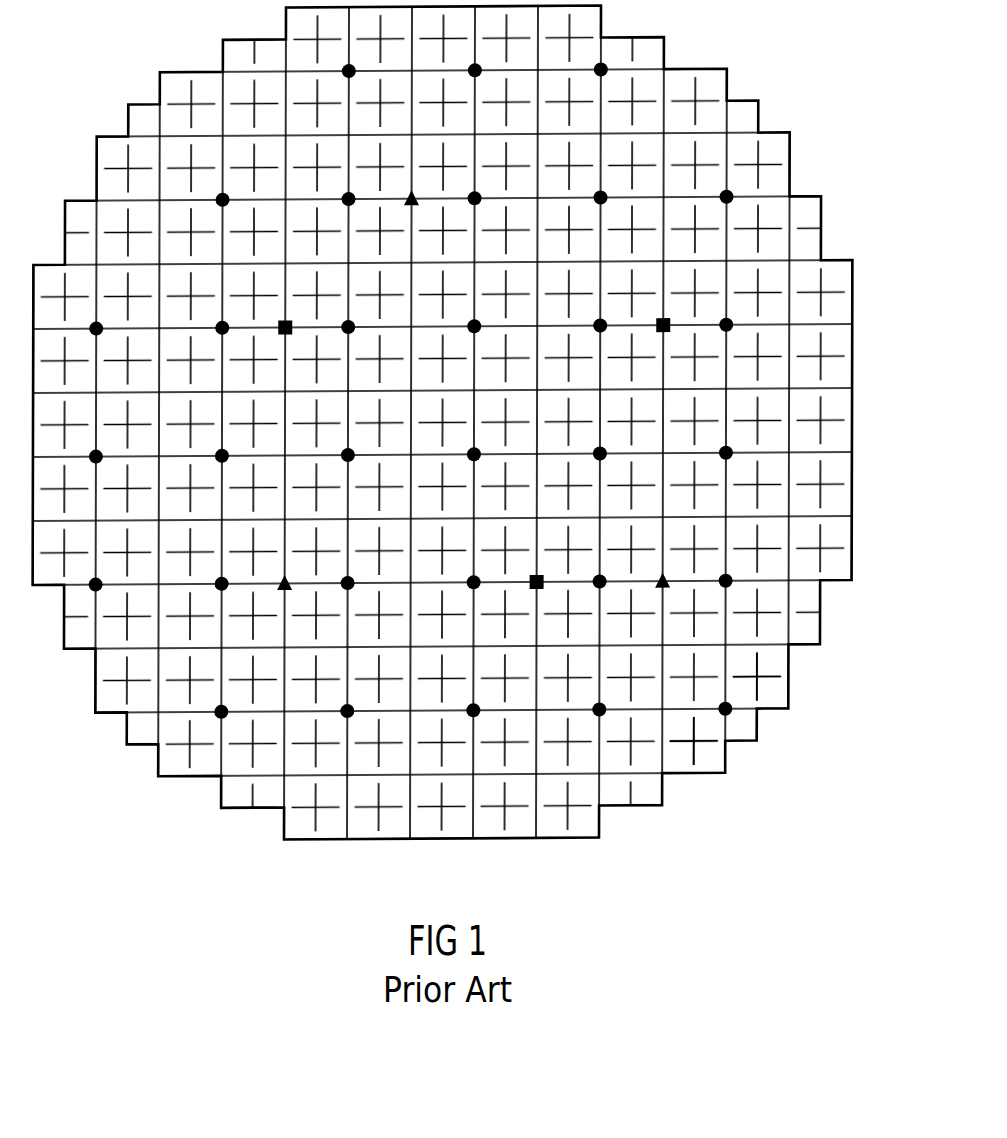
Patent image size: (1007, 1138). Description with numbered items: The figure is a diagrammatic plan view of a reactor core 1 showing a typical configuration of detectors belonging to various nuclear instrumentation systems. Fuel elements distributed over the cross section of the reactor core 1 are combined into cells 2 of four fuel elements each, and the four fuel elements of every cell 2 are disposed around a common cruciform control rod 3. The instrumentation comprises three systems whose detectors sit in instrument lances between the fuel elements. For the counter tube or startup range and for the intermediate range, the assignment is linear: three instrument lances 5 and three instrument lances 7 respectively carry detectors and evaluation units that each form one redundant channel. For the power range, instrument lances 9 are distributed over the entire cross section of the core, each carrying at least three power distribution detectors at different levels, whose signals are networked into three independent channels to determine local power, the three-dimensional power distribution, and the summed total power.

The reactor core 1 is at (853, 467).
The cell 2 is at (773, 690).
The cruciform control rod 3 is at (705, 742).
The instrument lance 5 is at (663, 590).
The instrument lance 7 is at (665, 331).
The instrument lance 9 is at (733, 318).